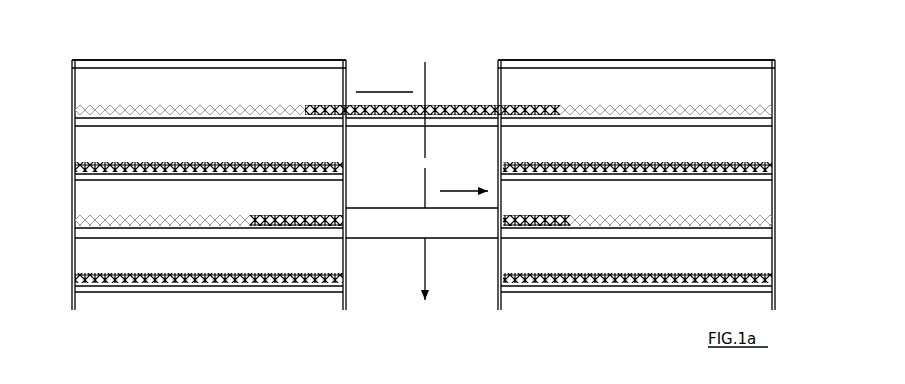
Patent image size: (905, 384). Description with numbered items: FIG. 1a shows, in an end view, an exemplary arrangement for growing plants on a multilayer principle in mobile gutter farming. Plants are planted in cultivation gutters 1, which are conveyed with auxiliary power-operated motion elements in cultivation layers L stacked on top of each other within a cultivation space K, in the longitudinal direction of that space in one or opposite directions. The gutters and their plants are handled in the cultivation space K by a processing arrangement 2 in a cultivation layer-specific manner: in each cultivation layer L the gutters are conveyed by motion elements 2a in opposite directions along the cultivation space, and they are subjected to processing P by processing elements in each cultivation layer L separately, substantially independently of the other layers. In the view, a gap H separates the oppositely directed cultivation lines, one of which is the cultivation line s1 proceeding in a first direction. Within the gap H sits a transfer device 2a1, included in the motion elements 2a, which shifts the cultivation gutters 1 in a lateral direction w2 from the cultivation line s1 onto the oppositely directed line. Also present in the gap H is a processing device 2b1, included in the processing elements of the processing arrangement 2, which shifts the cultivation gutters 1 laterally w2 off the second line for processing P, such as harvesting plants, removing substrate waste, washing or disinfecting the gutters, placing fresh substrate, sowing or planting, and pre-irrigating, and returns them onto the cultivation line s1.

The cultivation layer L is at (140, 97).
The cultivation space K is at (618, 94).
The gap H is at (378, 162).
The cultivation gutter 1 is at (468, 100).
The processing arrangement 2 is at (345, 127).
The processing device 2b1 is at (372, 207).
The motion elements 2a is at (446, 205).
The transfer device 2a1 is at (450, 133).
The cultivation line s1 is at (678, 60).
The processing P is at (483, 257).
The lateral shifting w2 is at (385, 87).